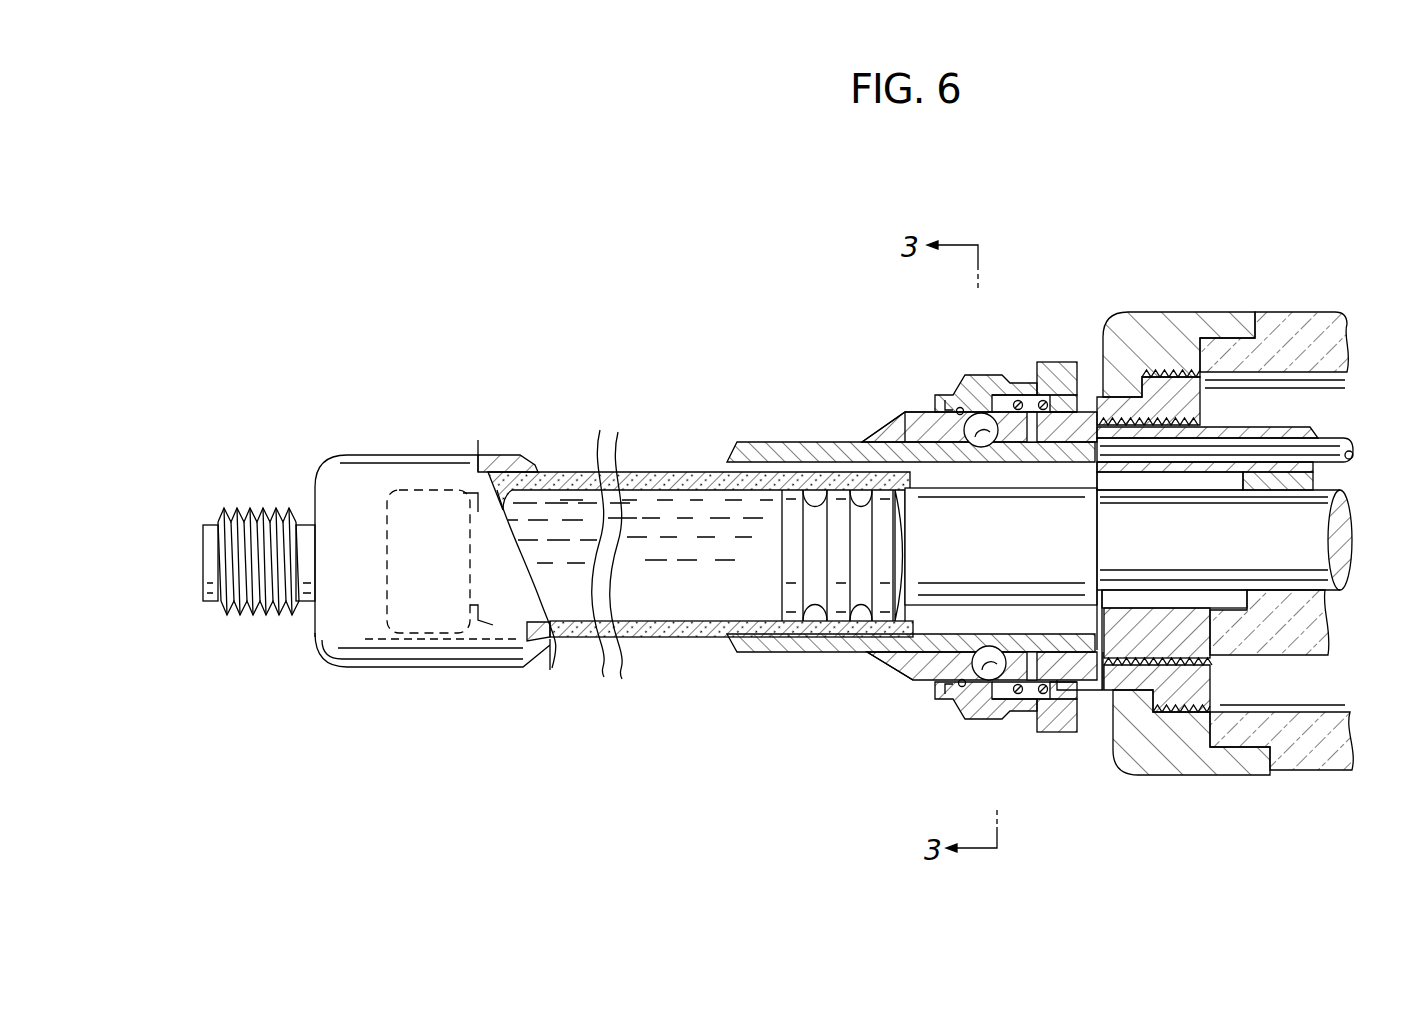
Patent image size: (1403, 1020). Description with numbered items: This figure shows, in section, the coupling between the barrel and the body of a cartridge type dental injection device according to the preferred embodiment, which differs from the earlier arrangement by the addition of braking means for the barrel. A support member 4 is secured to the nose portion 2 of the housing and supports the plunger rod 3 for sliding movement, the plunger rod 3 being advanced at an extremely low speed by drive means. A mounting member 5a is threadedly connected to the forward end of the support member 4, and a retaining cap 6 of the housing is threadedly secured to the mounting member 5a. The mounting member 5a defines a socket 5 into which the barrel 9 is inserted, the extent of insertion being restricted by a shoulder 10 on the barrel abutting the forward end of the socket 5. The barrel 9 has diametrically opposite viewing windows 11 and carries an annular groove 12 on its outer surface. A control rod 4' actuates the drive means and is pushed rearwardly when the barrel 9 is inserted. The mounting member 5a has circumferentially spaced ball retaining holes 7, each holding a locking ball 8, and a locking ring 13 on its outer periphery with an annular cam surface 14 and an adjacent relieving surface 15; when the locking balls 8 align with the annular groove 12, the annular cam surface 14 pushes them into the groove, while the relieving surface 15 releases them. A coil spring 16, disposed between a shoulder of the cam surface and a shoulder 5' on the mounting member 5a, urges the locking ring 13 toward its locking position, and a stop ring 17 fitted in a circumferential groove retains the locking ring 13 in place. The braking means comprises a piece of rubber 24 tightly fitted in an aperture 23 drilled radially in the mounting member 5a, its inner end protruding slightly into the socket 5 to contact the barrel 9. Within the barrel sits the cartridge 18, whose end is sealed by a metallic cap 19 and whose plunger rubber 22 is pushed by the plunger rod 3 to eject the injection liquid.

The nose portion 2 is at (1283, 335).
The plunger rod 3 is at (1280, 545).
The support member 4 is at (1207, 607).
The control rod 4' is at (1225, 352).
The socket 5 is at (997, 619).
The shoulder 5' is at (1064, 757).
The mounting member 5a is at (903, 662).
The retaining cap 6 is at (1185, 750).
The ball retaining holes 7 is at (989, 648).
The locking balls 8 is at (985, 440).
The barrel 9 is at (770, 455).
The shoulder 10 is at (873, 420).
The viewing windows 11 is at (538, 470).
The annular groove 12 is at (965, 450).
The locking ring 13 is at (1055, 375).
The annular cam surface 14 is at (977, 398).
The relieving surface 15 is at (947, 400).
The coil spring 16 is at (1030, 400).
The stop ring 17 is at (955, 411).
The cartridge 18 is at (666, 470).
The metallic cap 19 is at (424, 515).
The plunger rubber 22 is at (882, 545).
The aperture 23 is at (1036, 430).
The piece of rubber 24 is at (1065, 415).